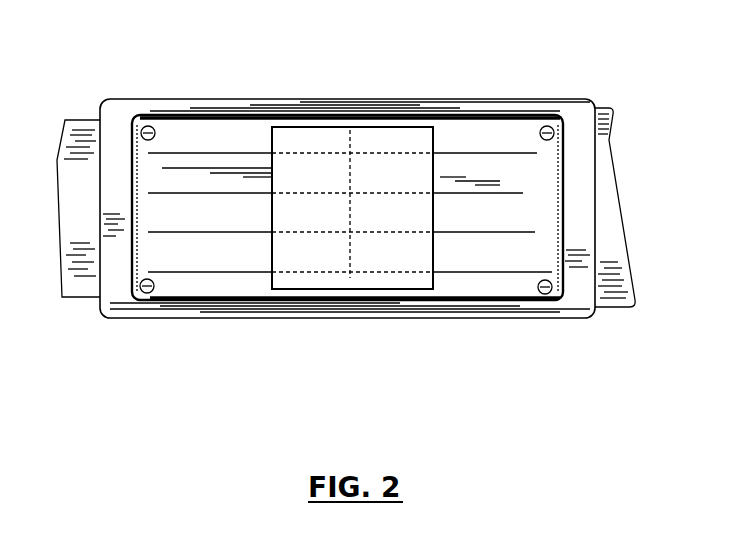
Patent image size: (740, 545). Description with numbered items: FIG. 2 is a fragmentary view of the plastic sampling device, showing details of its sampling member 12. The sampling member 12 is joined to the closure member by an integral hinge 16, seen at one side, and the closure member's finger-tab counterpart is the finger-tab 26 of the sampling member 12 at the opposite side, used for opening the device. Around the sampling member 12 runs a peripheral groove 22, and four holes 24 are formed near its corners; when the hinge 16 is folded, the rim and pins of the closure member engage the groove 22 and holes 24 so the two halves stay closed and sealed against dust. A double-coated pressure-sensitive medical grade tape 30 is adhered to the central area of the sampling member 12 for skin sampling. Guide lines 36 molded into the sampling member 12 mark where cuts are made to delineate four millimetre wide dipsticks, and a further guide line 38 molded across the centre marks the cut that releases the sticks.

The sampling member 12 is at (352, 105).
The integral hinge 16 is at (73, 128).
The peripheral groove 22 is at (462, 118).
The holes 24 is at (149, 126).
The finger-tab 26 is at (628, 300).
The double-coated pressure-sensitive medical grade tape 30 is at (272, 278).
The guide lines 36 is at (162, 272).
The guide line 38 is at (349, 210).